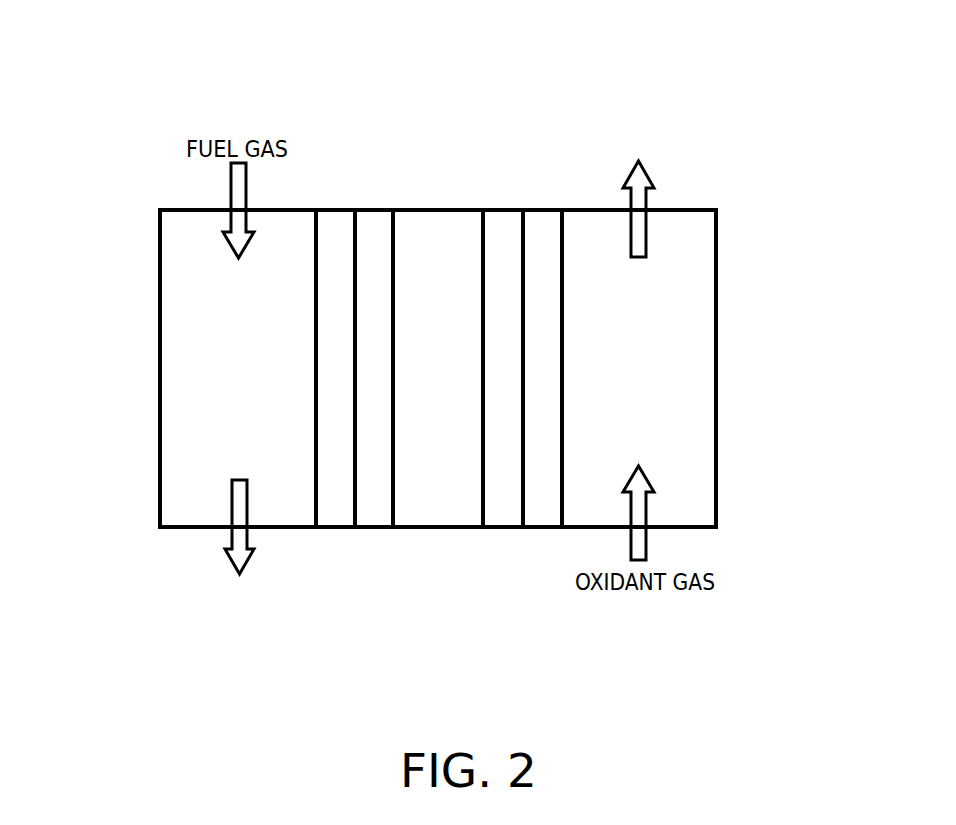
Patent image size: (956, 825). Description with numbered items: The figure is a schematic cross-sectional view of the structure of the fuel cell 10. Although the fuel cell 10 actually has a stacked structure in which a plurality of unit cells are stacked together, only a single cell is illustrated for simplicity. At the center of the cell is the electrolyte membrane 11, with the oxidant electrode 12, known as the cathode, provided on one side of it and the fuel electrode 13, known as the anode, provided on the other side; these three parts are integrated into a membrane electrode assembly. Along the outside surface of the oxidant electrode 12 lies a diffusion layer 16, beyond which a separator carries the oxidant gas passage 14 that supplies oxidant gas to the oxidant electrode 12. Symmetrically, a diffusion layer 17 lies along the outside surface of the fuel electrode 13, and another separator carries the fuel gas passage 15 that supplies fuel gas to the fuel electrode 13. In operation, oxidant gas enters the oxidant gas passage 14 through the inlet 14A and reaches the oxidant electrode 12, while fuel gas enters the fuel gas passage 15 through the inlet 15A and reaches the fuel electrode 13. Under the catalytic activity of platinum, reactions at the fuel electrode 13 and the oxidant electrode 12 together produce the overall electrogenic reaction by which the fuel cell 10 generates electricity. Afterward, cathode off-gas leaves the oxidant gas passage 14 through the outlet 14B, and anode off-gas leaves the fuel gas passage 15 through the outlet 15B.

The fuel cell 10 is at (439, 79).
The electrolyte membrane 11 is at (440, 529).
The oxidant electrode 12 is at (503, 529).
The fuel electrode 13 is at (375, 529).
The oxidant gas passage 14 is at (718, 440).
The inlet 14A is at (691, 529).
The outlet 14B is at (688, 209).
The fuel gas passage 15 is at (158, 428).
The inlet 15A is at (187, 209).
The outlet 15B is at (188, 529).
The diffusion layer 16 is at (543, 529).
The diffusion layer 17 is at (336, 529).